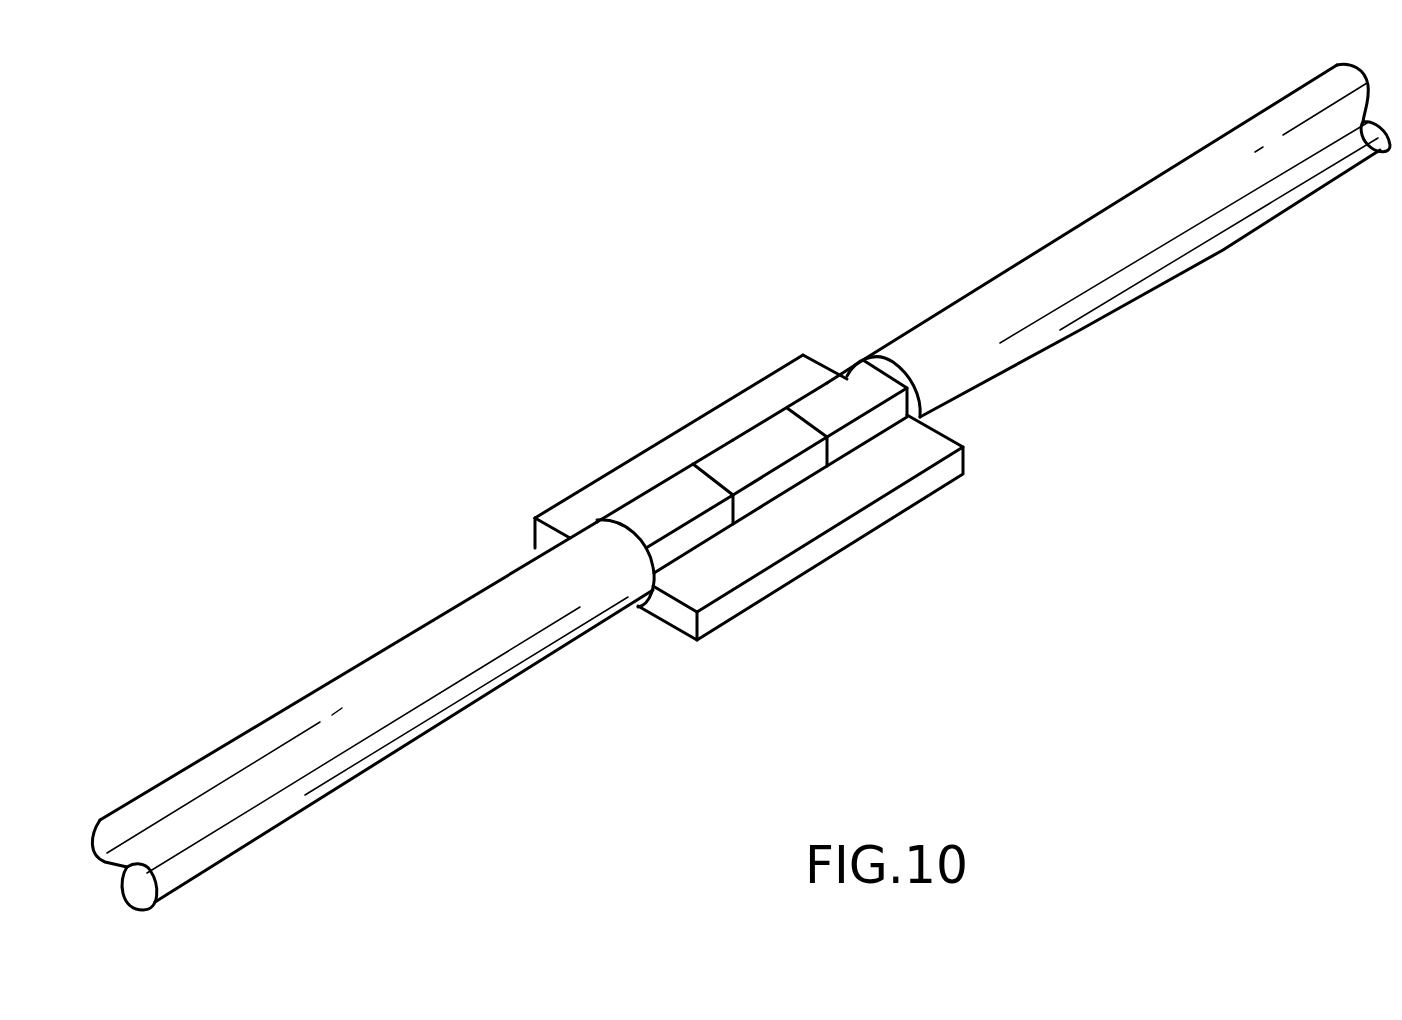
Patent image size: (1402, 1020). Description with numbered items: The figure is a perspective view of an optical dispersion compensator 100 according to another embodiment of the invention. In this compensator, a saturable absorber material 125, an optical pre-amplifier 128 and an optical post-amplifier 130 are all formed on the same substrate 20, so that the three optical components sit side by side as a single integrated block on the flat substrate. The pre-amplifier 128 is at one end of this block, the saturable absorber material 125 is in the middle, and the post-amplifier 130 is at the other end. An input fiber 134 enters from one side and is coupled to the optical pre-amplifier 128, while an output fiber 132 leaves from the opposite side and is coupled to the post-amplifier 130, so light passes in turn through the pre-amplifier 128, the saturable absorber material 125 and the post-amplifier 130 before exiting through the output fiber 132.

The optical dispersion compensator 100 is at (720, 173).
The substrate 20 is at (837, 537).
The saturable absorber material 125 is at (742, 455).
The optical pre-amplifier 128 is at (657, 505).
The optical post-amplifier 130 is at (818, 410).
The output fiber 132 is at (1085, 274).
The input fiber 134 is at (377, 741).